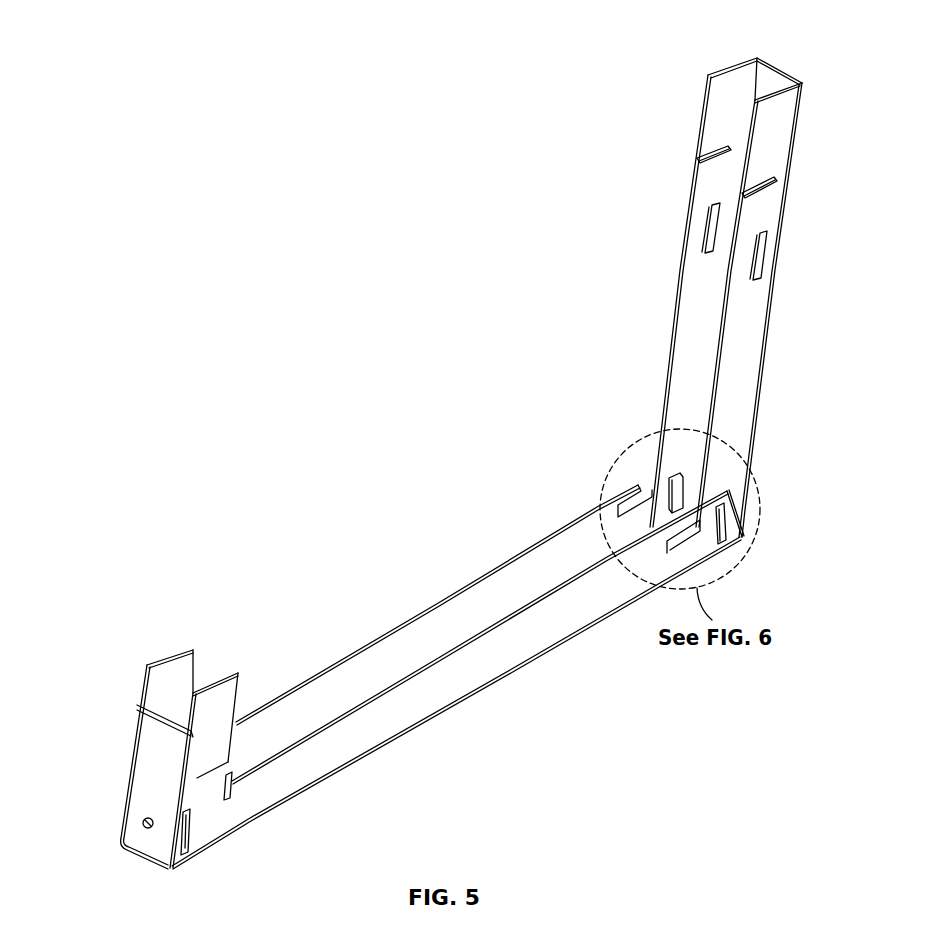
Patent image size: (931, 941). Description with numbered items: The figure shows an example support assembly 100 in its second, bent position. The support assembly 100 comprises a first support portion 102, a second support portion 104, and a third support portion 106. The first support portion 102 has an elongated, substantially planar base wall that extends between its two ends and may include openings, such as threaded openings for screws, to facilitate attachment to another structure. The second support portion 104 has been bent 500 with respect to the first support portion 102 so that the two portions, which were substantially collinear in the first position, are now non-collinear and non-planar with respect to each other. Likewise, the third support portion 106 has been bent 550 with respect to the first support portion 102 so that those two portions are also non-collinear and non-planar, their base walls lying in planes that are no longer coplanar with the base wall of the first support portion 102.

The support assembly 100 is at (219, 174).
The first support portion 102 is at (418, 579).
The second support portion 104 is at (661, 204).
The third support portion 106 is at (126, 709).
The bend 500 is at (769, 485).
The bend 550 is at (113, 804).